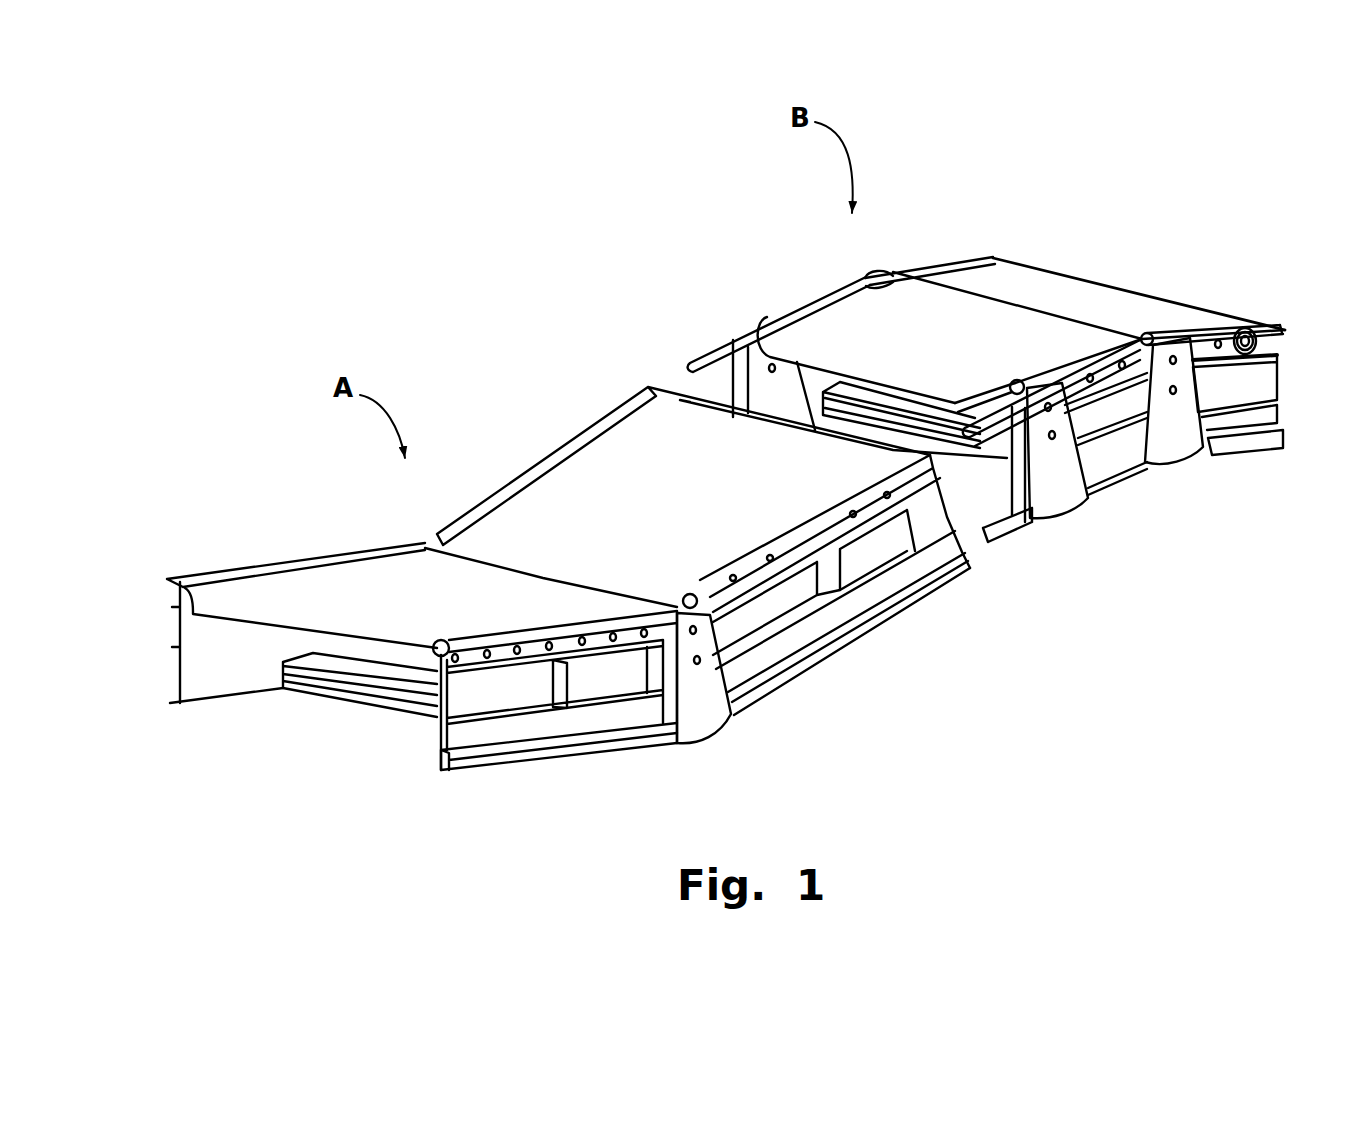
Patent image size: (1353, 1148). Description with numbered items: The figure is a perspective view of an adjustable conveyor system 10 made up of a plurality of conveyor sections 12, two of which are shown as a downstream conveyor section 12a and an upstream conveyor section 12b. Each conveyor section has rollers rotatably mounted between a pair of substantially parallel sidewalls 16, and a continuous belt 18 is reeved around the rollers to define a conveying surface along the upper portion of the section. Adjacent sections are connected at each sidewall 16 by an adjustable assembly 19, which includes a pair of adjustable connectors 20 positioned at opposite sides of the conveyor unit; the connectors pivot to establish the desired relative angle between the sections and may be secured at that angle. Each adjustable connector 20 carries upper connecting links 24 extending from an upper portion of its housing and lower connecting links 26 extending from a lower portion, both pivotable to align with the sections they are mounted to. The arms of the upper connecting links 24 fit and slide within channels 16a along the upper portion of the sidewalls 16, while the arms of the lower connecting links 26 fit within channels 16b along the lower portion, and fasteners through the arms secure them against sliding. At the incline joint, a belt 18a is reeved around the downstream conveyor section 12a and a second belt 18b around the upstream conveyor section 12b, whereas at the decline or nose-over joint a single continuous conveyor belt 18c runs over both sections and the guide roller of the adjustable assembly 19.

The adjustable conveyor system 10 is at (705, 513).
The conveyor section 12 is at (705, 513).
The downstream conveyor section 12a is at (573, 777).
The upstream conveyor section 12b is at (913, 601).
The sidewall 16 is at (705, 588).
The upper channel 16a is at (177, 582).
The lower channel 16b is at (177, 700).
The continuous belt 18 is at (735, 404).
The downstream conveyor belt 18a is at (383, 570).
The upstream conveyor belt 18b is at (613, 452).
The single continuous conveyor belt 18c is at (1102, 288).
The adjustable assembly 19 is at (688, 745).
The adjustable connector 20 is at (730, 390).
The upper connecting link 24 is at (697, 365).
The lower connecting link 26 is at (997, 548).